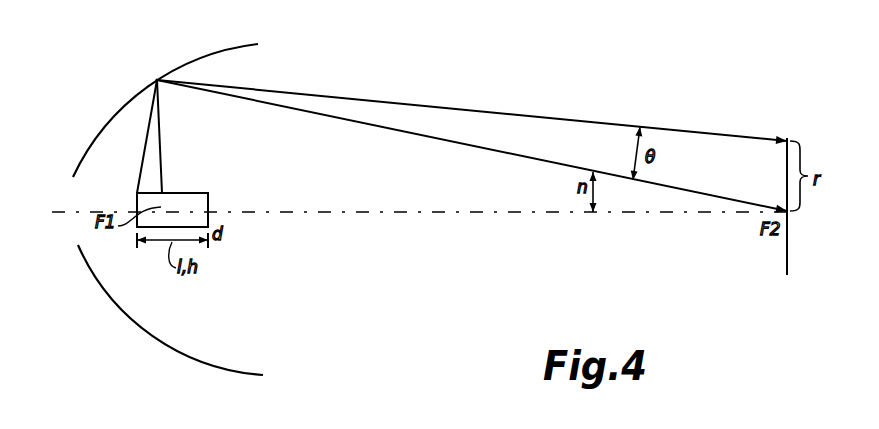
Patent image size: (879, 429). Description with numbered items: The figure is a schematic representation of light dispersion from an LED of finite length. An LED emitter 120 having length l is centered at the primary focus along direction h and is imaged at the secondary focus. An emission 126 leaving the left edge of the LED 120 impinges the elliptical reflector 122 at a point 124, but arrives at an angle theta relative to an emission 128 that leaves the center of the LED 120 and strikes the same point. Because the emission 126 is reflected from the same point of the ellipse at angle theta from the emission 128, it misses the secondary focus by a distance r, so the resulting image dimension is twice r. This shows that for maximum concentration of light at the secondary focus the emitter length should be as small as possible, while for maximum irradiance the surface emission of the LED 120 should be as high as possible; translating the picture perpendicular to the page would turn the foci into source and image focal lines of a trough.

The LED emitter 120 is at (203, 217).
The reflector 122 is at (122, 107).
The point 124 is at (156, 79).
The emission from left edge of LED 126 is at (143, 153).
The emission from center of LED 128 is at (160, 107).